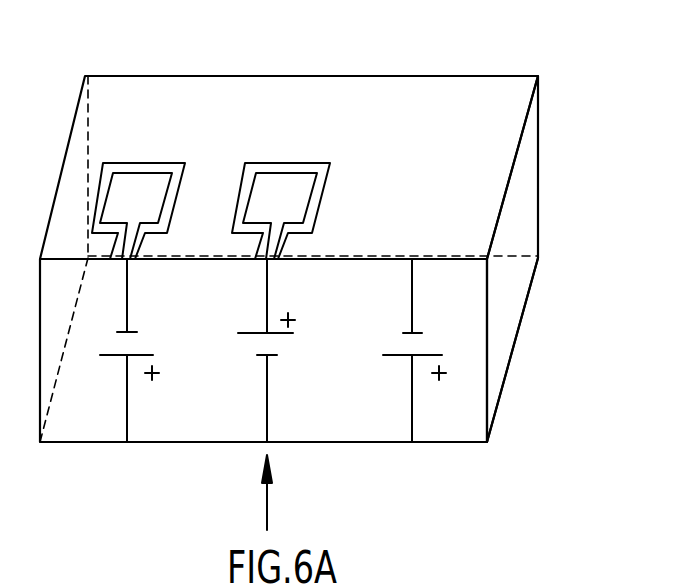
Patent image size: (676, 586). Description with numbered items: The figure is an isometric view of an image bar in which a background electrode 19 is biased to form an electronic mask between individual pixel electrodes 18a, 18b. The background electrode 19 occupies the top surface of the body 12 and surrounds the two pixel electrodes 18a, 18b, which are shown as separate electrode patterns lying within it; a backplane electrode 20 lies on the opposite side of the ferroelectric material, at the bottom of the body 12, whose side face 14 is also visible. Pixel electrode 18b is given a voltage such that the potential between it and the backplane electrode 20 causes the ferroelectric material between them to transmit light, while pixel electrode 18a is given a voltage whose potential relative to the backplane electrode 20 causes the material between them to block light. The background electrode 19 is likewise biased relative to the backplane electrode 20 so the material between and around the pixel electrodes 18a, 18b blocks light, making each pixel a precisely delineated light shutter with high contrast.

The background electrode 19 is at (462, 92).
The substrate body 12 is at (512, 168).
The side surface 14 is at (527, 302).
The backplane electrode 20 is at (430, 445).
The pixel electrode 18a is at (135, 187).
The pixel electrode 18b is at (277, 187).